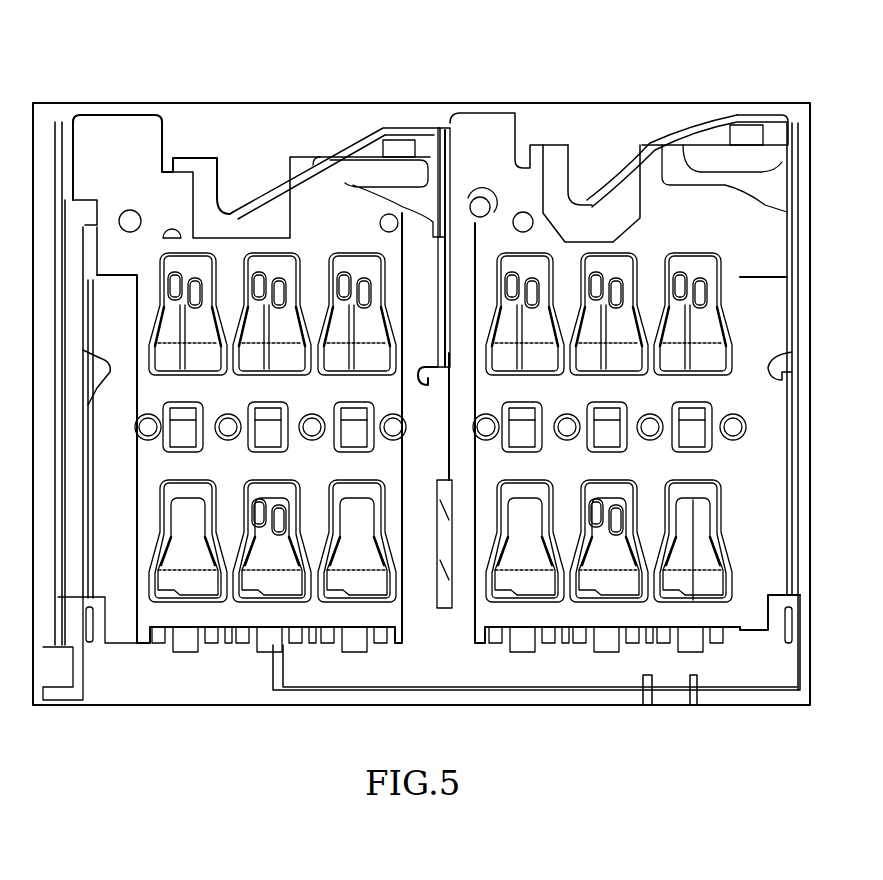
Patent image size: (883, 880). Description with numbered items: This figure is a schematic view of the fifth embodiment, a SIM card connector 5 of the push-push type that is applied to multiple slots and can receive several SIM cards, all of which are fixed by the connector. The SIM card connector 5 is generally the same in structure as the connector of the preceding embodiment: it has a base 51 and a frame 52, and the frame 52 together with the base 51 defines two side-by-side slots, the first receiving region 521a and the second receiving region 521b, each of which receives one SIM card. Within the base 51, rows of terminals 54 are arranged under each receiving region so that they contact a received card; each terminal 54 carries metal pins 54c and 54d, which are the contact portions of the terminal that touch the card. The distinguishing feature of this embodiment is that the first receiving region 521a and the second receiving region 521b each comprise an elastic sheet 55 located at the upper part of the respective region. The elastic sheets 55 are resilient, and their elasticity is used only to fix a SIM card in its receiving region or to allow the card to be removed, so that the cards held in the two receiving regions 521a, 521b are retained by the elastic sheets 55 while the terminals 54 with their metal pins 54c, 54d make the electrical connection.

The SIM card connector 5 is at (78, 44).
The base 51 is at (738, 235).
The frame 52 is at (770, 185).
The first receiving region 521a is at (650, 118).
The second receiving region 521b is at (183, 125).
The terminal 54 is at (700, 510).
The metal pin 54c is at (592, 577).
The metal pin 54d is at (627, 575).
The elastic sheet 55 is at (343, 140).